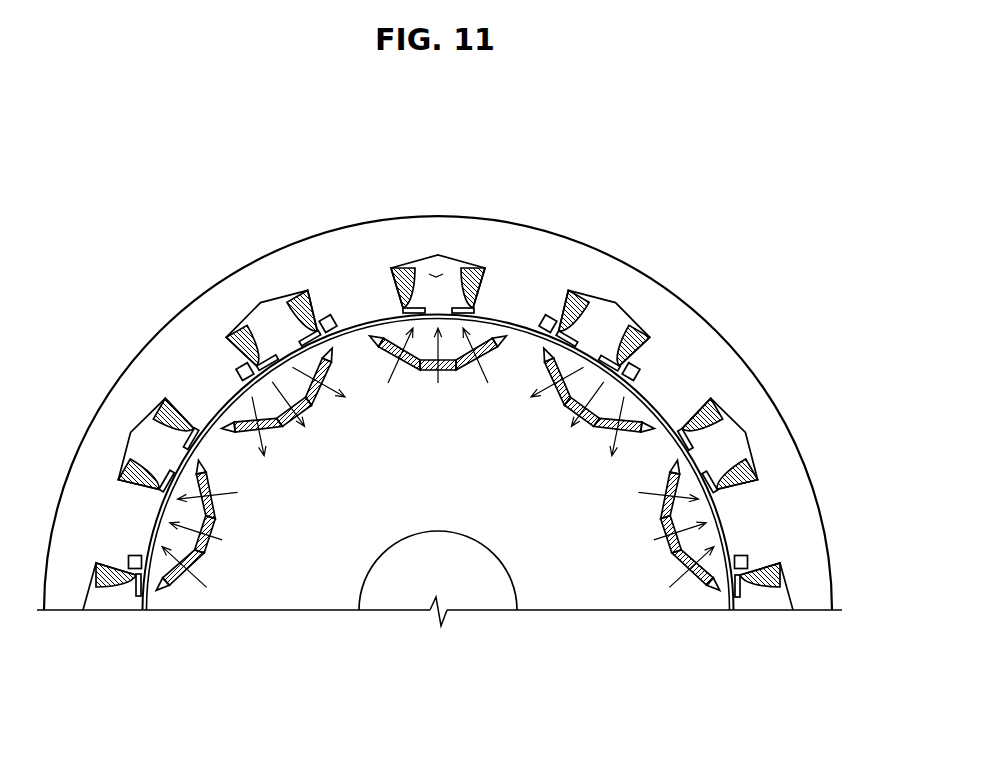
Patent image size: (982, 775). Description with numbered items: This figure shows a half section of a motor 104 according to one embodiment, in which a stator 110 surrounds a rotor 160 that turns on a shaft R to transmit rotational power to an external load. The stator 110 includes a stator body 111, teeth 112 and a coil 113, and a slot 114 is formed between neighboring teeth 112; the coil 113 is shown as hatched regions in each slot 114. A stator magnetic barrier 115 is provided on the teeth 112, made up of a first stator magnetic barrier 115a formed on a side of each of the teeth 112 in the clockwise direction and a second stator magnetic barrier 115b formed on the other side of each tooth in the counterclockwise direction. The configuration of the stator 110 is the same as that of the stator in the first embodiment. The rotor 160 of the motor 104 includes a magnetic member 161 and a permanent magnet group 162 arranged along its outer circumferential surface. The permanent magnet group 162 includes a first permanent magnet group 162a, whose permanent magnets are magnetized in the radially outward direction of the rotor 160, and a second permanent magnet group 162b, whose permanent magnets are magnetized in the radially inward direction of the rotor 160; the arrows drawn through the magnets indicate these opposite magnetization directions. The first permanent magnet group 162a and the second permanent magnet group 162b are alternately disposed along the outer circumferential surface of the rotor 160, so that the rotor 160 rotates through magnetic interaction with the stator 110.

The motor 104 is at (697, 133).
The stator 110 is at (102, 614).
The stator body 111 is at (527, 263).
The teeth 112 is at (352, 308).
The coil 113 is at (400, 262).
The slot 114 is at (436, 276).
The stator magnetic barrier 115 is at (193, 195).
The first stator magnetic barrier 115a is at (238, 368).
The second stator magnetic barrier 115b is at (325, 312).
The rotor 160 is at (170, 614).
The magnetic member 161 is at (290, 603).
The permanent magnet group 162 is at (447, 440).
The first permanent magnet group 162a is at (431, 372).
The second permanent magnet group 162b is at (323, 402).
The shaft R is at (482, 602).